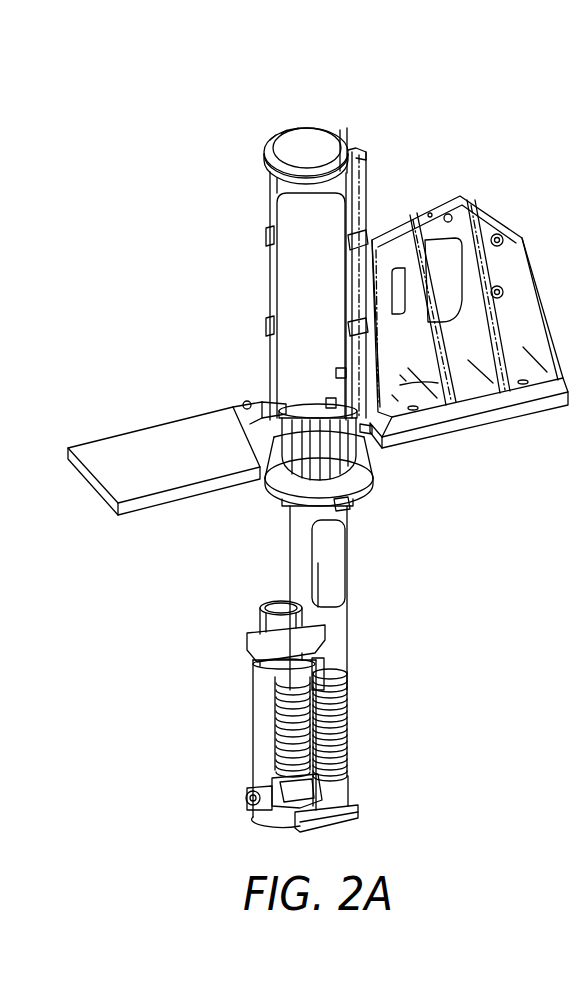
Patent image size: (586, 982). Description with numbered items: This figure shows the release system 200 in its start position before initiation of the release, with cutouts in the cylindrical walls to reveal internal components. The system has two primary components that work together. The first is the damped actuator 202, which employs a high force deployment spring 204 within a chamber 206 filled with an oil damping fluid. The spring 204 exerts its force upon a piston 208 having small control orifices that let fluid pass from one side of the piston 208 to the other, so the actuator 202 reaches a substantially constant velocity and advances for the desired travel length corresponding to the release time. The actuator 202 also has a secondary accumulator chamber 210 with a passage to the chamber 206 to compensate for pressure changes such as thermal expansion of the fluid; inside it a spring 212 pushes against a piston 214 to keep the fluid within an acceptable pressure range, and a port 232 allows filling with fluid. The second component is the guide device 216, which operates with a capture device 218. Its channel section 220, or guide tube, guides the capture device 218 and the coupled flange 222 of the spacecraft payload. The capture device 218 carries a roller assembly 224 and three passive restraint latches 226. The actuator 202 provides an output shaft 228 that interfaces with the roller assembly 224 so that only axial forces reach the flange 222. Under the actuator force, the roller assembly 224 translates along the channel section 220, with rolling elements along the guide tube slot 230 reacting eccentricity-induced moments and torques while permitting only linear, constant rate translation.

The system 200 is at (422, 94).
The actuator 202 is at (340, 613).
The high force deployment spring 204 is at (350, 722).
The chamber 206 is at (335, 655).
The piston 208 is at (345, 690).
The secondary accumulator chamber 210 is at (265, 725).
The spring 212 is at (272, 692).
The piston 214 is at (275, 765).
The guide device 216 is at (276, 270).
The capture device 218 is at (363, 476).
The channel section 220 is at (324, 262).
The flange 222 is at (330, 345).
The roller assembly 224 is at (346, 494).
The passive restraint latches 226 is at (340, 372).
The output shaft 228 is at (318, 563).
The guide tube slot 230 is at (350, 150).
The port 232 is at (248, 794).